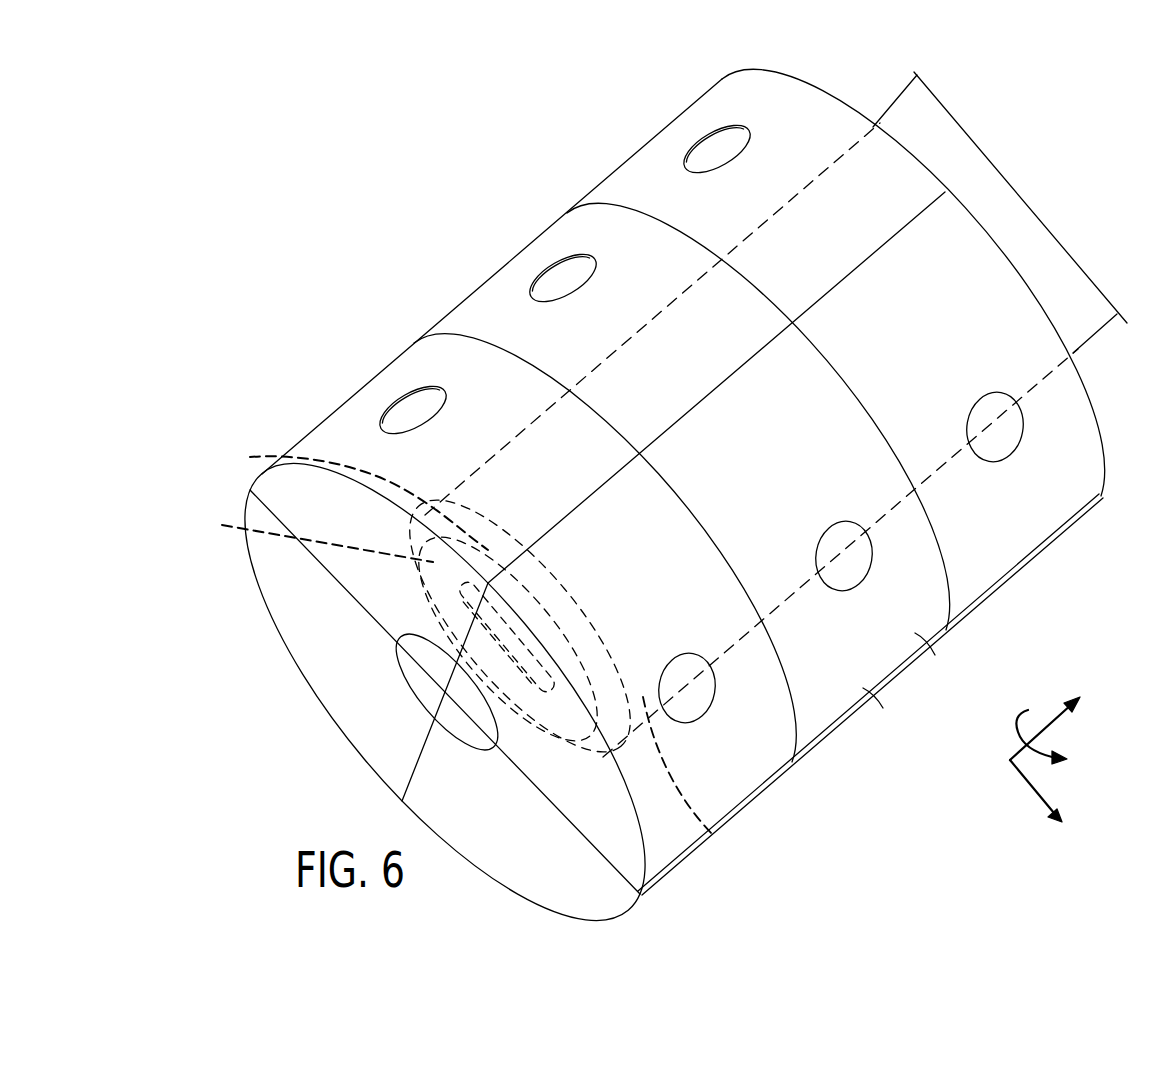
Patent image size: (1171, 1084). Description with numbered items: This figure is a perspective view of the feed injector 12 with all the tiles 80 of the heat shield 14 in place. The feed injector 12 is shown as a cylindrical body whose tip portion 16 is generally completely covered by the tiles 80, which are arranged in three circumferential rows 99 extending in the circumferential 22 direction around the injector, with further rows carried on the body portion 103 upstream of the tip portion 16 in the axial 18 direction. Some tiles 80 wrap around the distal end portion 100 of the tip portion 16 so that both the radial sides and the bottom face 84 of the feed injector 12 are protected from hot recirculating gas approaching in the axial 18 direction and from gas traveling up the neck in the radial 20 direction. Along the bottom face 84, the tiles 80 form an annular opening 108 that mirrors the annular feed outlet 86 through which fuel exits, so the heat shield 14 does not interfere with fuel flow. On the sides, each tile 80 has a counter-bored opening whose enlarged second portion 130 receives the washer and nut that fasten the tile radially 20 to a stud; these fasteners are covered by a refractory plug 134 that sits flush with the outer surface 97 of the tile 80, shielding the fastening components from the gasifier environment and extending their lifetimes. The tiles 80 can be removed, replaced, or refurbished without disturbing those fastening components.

The feed injector 12 is at (1085, 326).
The heat shield 14 is at (928, 648).
The tip portion 16 is at (716, 840).
The axial direction 18 is at (1058, 716).
The radial direction 20 is at (1030, 793).
The circumferential direction 22 is at (1022, 733).
The tile 80 is at (325, 563).
The bottom face 84 is at (309, 535).
The feed outlet 86 is at (530, 652).
The outer surface 97 is at (873, 700).
The rows 99 is at (1032, 566).
The distal end portion 100 is at (345, 495).
The body portion 103 is at (906, 112).
The annular opening 108 is at (455, 696).
The second portion 130 is at (389, 411).
The plug 134 is at (414, 405).